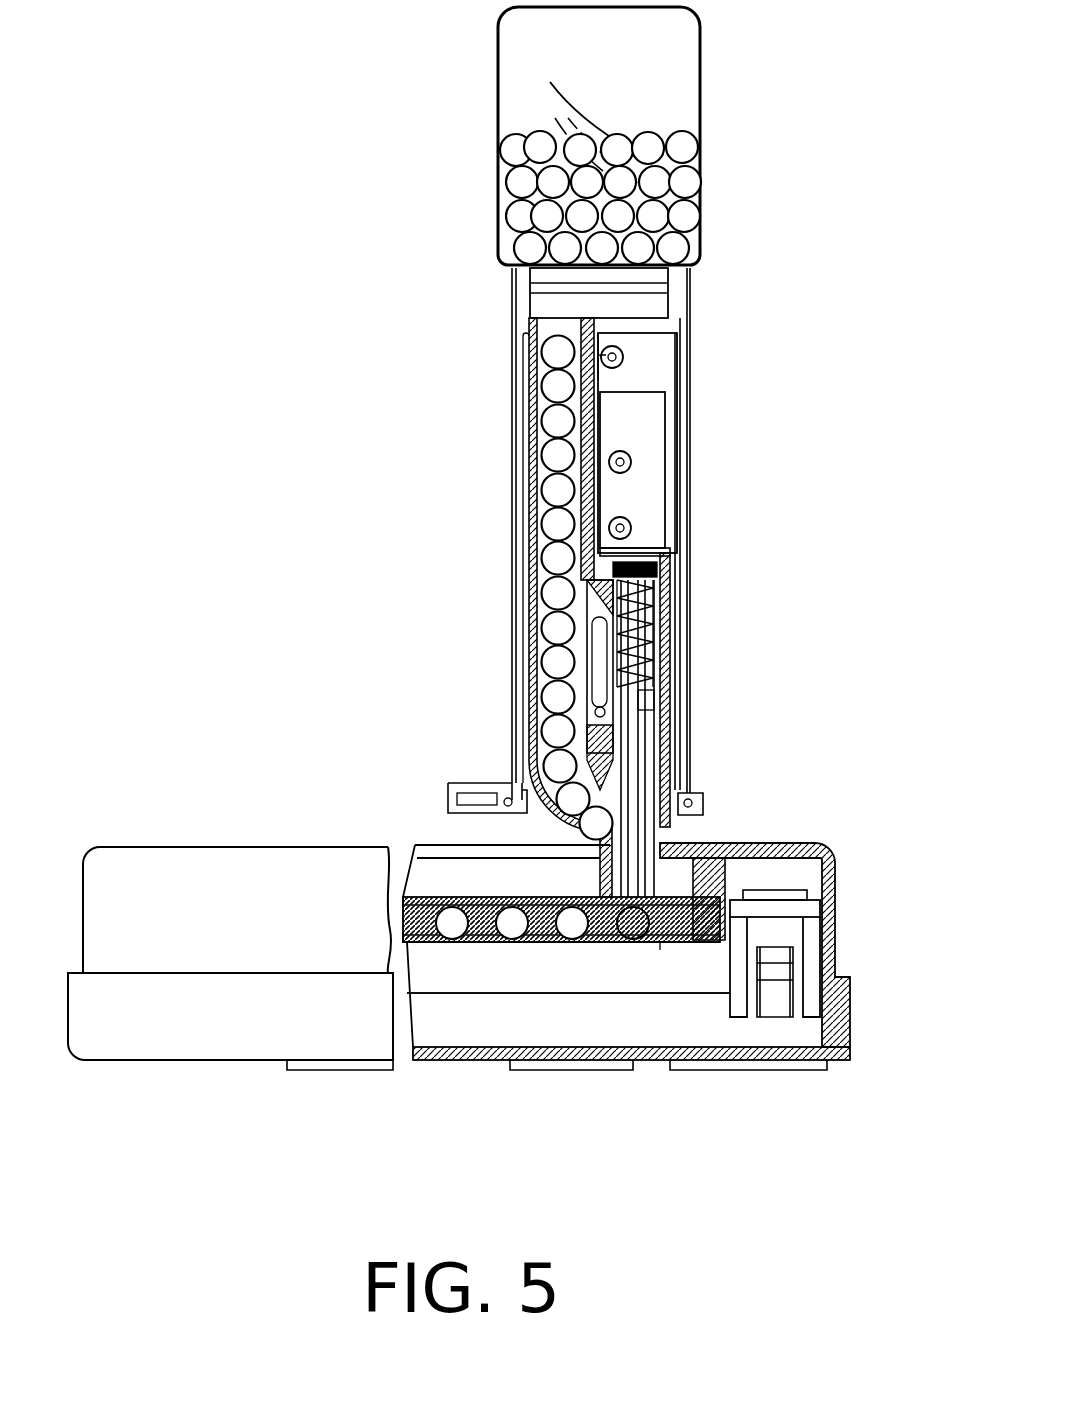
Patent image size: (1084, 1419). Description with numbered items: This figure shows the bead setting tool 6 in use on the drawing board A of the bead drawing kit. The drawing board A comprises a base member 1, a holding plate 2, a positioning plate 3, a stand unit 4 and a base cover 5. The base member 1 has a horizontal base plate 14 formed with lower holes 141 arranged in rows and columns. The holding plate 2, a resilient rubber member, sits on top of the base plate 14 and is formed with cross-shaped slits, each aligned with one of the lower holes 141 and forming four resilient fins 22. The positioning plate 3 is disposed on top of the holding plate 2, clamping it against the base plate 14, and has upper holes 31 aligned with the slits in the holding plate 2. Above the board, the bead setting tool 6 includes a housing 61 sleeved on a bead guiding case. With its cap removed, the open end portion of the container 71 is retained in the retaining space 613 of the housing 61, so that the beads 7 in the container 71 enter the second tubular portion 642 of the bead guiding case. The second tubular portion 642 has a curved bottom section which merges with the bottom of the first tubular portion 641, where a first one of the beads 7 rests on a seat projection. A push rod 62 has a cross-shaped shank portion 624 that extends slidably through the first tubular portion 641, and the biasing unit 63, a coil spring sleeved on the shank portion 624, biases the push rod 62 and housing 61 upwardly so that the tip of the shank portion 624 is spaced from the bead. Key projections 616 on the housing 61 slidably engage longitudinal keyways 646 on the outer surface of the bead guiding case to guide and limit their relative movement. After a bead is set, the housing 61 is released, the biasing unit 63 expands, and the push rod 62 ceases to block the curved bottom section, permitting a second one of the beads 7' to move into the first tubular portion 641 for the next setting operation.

The base member 1 is at (827, 863).
The holding plate 2 is at (678, 945).
The positioning plate 3 is at (705, 850).
The stand unit 4 is at (782, 928).
The base cover 5 is at (740, 1053).
The drawing board A is at (823, 1073).
The bead setting tool 6 is at (697, 455).
The beads 7 is at (663, 627).
The second one of the beads 7' is at (521, 588).
The base plate 14 is at (660, 943).
The resilient fins 22 is at (420, 940).
The upper holes 31 is at (453, 897).
The housing 61 is at (690, 432).
The push rod 62 is at (643, 422).
The biasing unit 63 is at (690, 553).
The container 71 is at (638, 52).
The lower holes 141 is at (557, 943).
The retaining space 613 is at (668, 300).
The key projections 616 is at (657, 697).
The shank portion 624 is at (647, 625).
The first tubular portion 641 is at (657, 750).
The second tubular portion 642 is at (542, 398).
The longitudinal keyways 646 is at (600, 657).